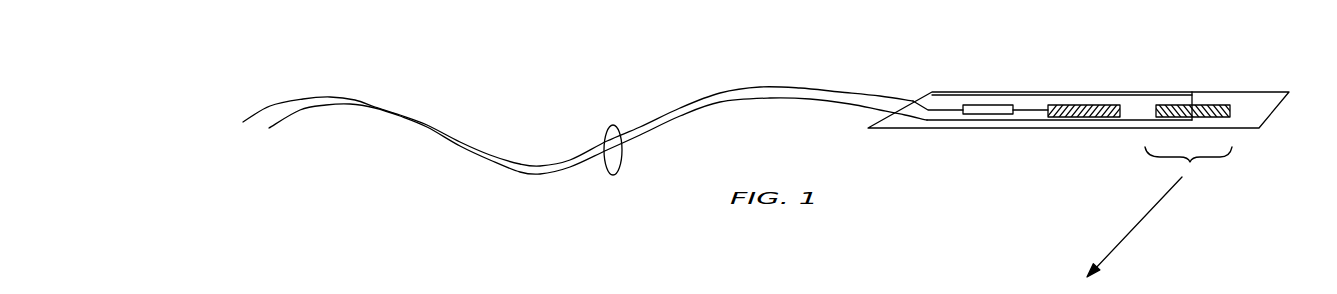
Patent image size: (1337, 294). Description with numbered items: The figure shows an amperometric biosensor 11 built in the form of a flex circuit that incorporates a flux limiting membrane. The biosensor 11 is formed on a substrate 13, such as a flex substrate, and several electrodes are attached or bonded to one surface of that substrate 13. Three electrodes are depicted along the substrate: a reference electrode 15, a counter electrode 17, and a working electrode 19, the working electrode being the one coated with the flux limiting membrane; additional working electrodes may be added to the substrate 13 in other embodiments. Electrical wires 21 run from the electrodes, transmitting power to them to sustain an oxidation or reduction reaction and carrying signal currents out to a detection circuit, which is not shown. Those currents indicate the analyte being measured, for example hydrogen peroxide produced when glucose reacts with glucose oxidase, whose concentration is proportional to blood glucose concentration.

The amperometric biosensor 11 is at (827, 30).
The substrate 13 is at (942, 101).
The reference electrode 15 is at (993, 105).
The counter electrode 17 is at (1072, 105).
The working electrode 19 is at (1192, 92).
The electrical wires 21 is at (612, 125).